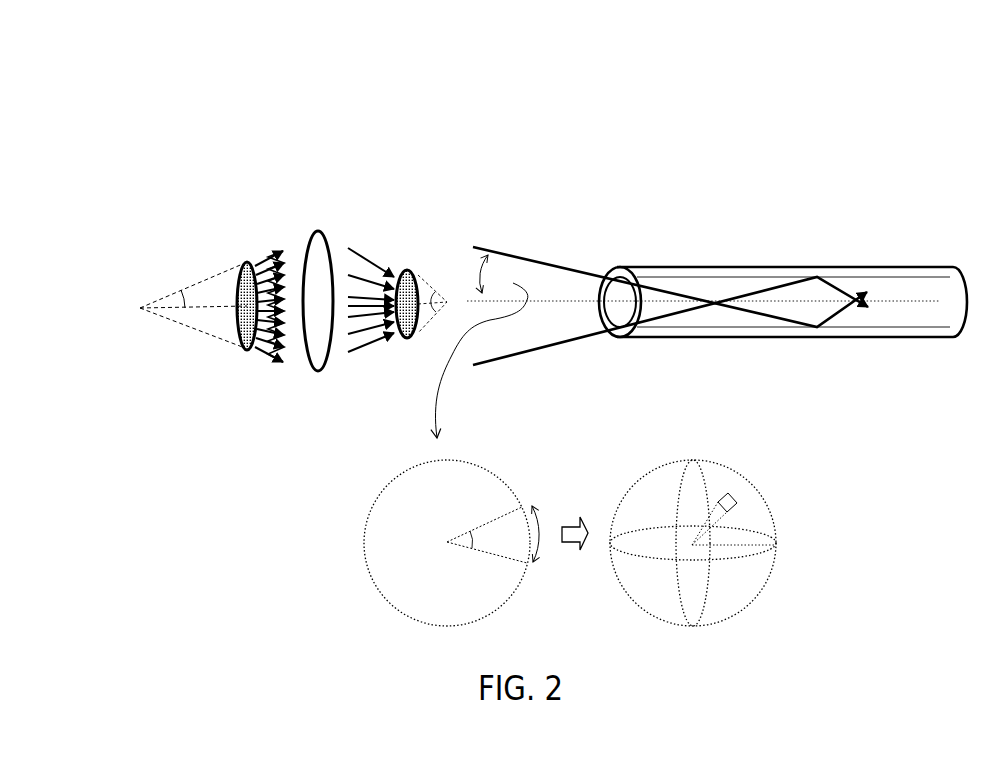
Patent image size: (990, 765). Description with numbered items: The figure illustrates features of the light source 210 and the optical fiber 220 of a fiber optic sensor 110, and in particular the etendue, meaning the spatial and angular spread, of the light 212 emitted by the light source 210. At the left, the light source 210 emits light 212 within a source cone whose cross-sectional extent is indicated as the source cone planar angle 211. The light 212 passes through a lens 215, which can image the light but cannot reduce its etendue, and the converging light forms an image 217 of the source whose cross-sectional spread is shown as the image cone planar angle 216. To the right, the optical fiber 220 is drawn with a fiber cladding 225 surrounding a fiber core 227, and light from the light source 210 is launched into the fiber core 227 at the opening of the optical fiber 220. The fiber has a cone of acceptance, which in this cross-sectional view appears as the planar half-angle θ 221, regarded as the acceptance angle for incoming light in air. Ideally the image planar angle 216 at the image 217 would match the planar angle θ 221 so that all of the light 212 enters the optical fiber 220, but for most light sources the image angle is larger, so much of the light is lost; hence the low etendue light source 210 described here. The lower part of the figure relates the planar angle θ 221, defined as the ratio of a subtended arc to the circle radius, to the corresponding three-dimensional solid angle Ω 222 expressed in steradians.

The fiber optic sensor 110 is at (178, 102).
The light source 210 is at (243, 260).
The source cone planar angle 211 is at (181, 290).
The light 212 is at (272, 372).
The lens 215 is at (313, 232).
The image cone planar angle 216 is at (435, 292).
The focused light spot (image of source) 217 is at (407, 268).
The optical fiber 220 is at (859, 267).
The planar angle θ 221 is at (491, 576).
The solid angle Ω 222 is at (688, 521).
The fiber cladding 225 is at (738, 272).
The fiber core 227 is at (943, 293).